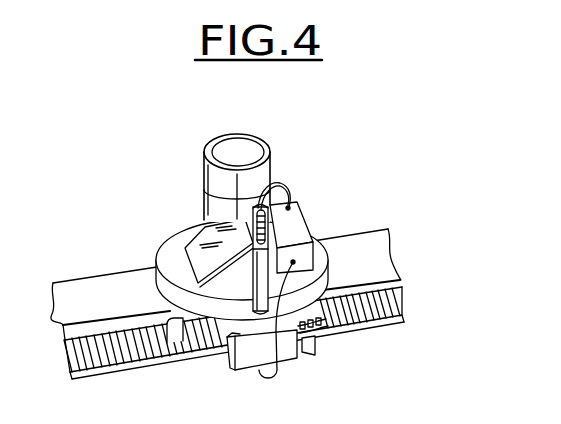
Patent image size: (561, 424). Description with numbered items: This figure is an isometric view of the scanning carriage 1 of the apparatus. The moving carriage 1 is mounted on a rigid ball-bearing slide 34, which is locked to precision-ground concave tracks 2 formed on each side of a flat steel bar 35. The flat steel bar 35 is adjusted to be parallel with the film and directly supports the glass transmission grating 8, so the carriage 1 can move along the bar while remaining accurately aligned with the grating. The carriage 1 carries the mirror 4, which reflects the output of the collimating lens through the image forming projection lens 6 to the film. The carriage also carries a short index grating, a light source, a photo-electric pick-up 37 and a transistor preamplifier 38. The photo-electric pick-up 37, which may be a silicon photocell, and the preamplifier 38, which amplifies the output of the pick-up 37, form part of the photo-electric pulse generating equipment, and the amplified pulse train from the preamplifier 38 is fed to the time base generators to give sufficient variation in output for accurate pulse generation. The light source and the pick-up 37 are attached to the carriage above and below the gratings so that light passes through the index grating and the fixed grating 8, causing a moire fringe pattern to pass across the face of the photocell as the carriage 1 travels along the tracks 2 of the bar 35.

The scanning carriage 1 is at (187, 233).
The concave tracks 2 is at (402, 280).
The mirror 4 is at (203, 257).
The image forming projection lens 6 is at (247, 150).
The glass transmission grating 8 is at (406, 320).
The ball-bearing slide 34 is at (330, 330).
The flat steel bar 35 is at (336, 260).
The photo-electric pick-up 37 is at (215, 365).
The transistor preamplifier 38 is at (293, 227).